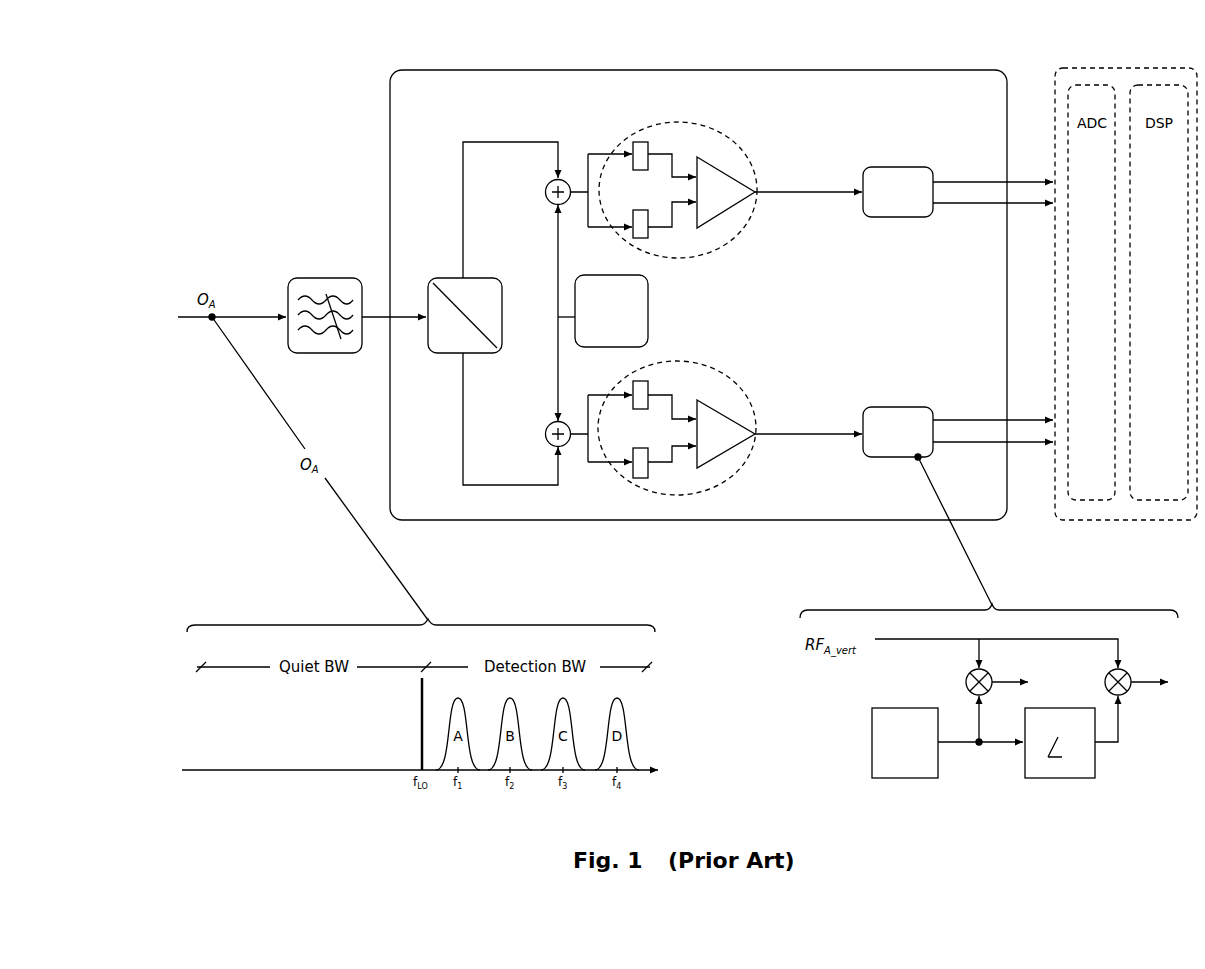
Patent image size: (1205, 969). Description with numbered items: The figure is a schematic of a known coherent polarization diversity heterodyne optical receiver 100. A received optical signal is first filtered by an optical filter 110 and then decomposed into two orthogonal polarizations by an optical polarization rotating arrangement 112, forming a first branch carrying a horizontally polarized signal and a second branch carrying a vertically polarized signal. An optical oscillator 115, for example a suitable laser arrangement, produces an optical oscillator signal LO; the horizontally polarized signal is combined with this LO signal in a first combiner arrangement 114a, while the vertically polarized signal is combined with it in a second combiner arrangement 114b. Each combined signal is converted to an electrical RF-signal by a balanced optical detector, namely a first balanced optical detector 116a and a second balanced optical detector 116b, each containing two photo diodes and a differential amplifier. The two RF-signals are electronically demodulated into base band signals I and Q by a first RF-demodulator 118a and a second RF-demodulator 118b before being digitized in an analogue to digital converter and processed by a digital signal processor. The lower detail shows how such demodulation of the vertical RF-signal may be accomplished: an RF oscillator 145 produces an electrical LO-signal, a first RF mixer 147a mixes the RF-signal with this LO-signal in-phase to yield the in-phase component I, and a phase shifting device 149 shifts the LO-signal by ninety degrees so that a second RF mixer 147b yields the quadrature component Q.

The coherent polarization diversity heterodyne optical receiver 100 is at (706, 96).
The optical filter 110 is at (326, 275).
The optical polarization rotating arrangement 112 is at (447, 275).
The first combiner arrangement 114a is at (545, 192).
The second combiner arrangement 114b is at (545, 434).
The optical oscillator 115 is at (652, 298).
The first balanced optical detector 116a is at (738, 248).
The second balanced optical detector 116b is at (742, 481).
The first RF-demodulator 118a is at (898, 220).
The second RF-demodulator 118b is at (898, 404).
The RF oscillator 145 is at (868, 764).
The first RF mixer 147a is at (965, 689).
The second RF mixer 147b is at (1104, 689).
The phase shifting device 149 is at (1099, 770).